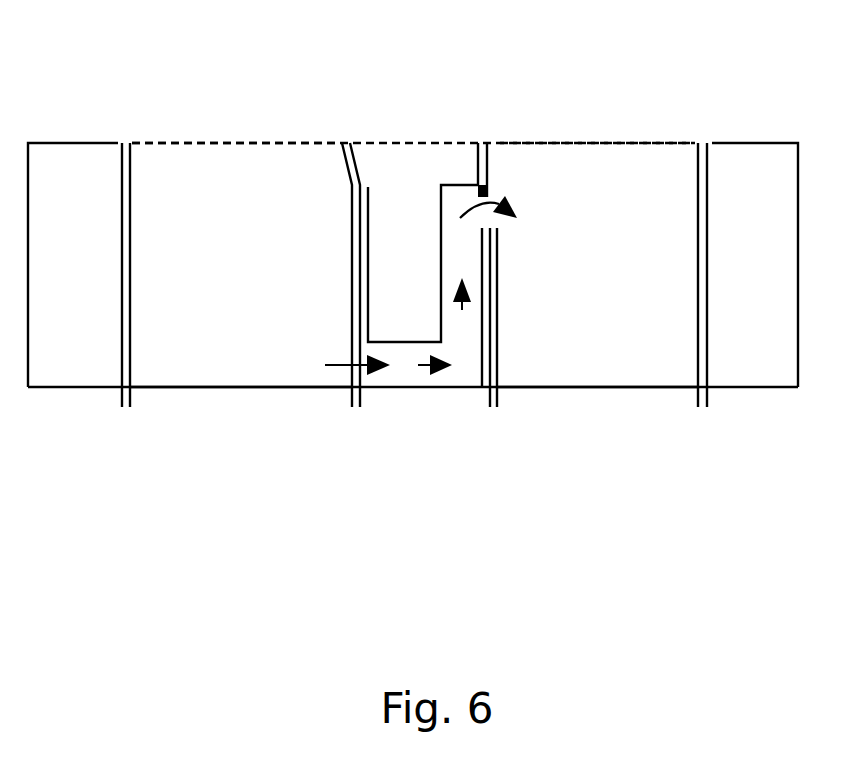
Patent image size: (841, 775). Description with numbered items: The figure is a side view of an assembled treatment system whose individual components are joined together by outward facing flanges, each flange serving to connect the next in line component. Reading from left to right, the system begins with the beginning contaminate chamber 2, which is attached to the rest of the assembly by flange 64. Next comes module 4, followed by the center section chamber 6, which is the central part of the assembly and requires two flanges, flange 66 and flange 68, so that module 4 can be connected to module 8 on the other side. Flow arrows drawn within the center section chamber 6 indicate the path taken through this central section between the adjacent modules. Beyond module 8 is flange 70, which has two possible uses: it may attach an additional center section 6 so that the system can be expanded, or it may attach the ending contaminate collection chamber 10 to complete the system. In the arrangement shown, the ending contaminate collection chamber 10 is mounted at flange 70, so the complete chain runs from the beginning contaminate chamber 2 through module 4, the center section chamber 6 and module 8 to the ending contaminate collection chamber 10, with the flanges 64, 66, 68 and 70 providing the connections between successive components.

The beginning contaminate chamber 2 is at (84, 185).
The module 4 is at (198, 186).
The center section chamber 6 is at (409, 173).
The module 8 is at (628, 185).
The ending contaminate collection chamber 10 is at (755, 185).
The flange 64 is at (125, 417).
The flange 66 is at (356, 417).
The flange 68 is at (493, 417).
The flange 70 is at (690, 418).